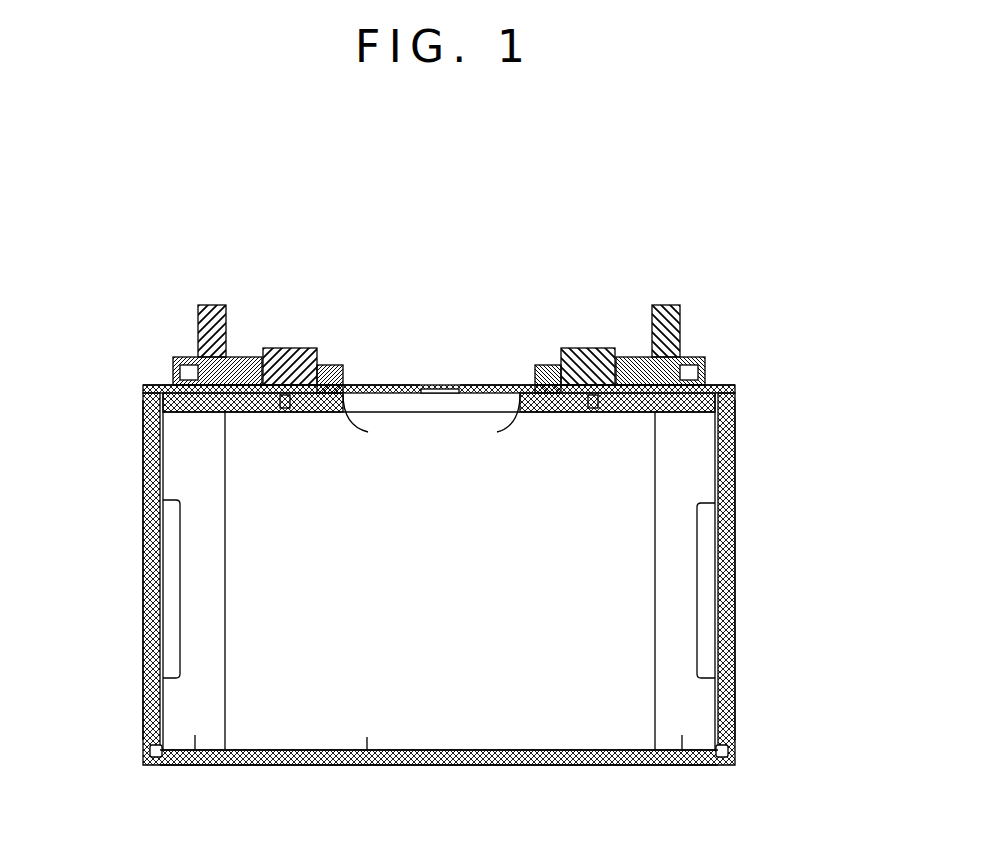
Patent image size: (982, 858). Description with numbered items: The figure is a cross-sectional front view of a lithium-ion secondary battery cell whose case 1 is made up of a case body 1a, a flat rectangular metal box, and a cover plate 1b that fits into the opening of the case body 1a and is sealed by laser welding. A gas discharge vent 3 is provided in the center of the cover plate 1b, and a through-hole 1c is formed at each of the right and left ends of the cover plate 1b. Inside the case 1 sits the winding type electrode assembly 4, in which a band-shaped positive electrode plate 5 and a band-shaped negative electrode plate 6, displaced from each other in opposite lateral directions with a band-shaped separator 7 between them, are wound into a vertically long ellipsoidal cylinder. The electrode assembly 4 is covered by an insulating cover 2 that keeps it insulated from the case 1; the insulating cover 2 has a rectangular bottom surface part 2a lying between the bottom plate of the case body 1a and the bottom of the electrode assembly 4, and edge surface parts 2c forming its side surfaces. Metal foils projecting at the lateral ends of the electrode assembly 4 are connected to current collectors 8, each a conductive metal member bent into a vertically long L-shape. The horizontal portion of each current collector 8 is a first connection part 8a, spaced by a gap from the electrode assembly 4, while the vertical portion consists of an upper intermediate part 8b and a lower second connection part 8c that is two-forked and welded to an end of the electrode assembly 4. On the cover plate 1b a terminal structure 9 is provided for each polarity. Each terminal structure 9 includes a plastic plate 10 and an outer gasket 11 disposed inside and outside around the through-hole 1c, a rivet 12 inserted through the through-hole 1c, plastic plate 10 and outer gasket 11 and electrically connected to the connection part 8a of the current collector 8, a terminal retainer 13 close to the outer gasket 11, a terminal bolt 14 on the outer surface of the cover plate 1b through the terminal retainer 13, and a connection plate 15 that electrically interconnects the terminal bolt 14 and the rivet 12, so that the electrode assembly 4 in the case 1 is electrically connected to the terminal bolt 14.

The case 1 is at (830, 368).
The case body 1a is at (735, 460).
The cover plate 1b is at (383, 385).
The through-hole 1c is at (283, 408).
The insulating cover 2 is at (735, 758).
The bottom surface part 2a is at (580, 760).
The edge surface part 2c is at (145, 705).
The gas discharge vent 3 is at (440, 385).
The electrode assembly 4 is at (477, 752).
The positive electrode plate 5 is at (190, 765).
The negative electrode plate 6 is at (683, 760).
The separator 7 is at (366, 750).
The current collector 8 is at (57, 430).
The first connection part 8a is at (203, 410).
The intermediate part 8b is at (145, 462).
The second connection part 8c is at (172, 581).
The terminal structure 9 is at (271, 316).
The plastic plate 10 is at (343, 397).
The outer gasket 11 is at (333, 362).
The rivet 12 is at (285, 350).
The terminal retainer 13 is at (175, 365).
The terminal bolt 14 is at (212, 305).
The connection plate 15 is at (250, 348).